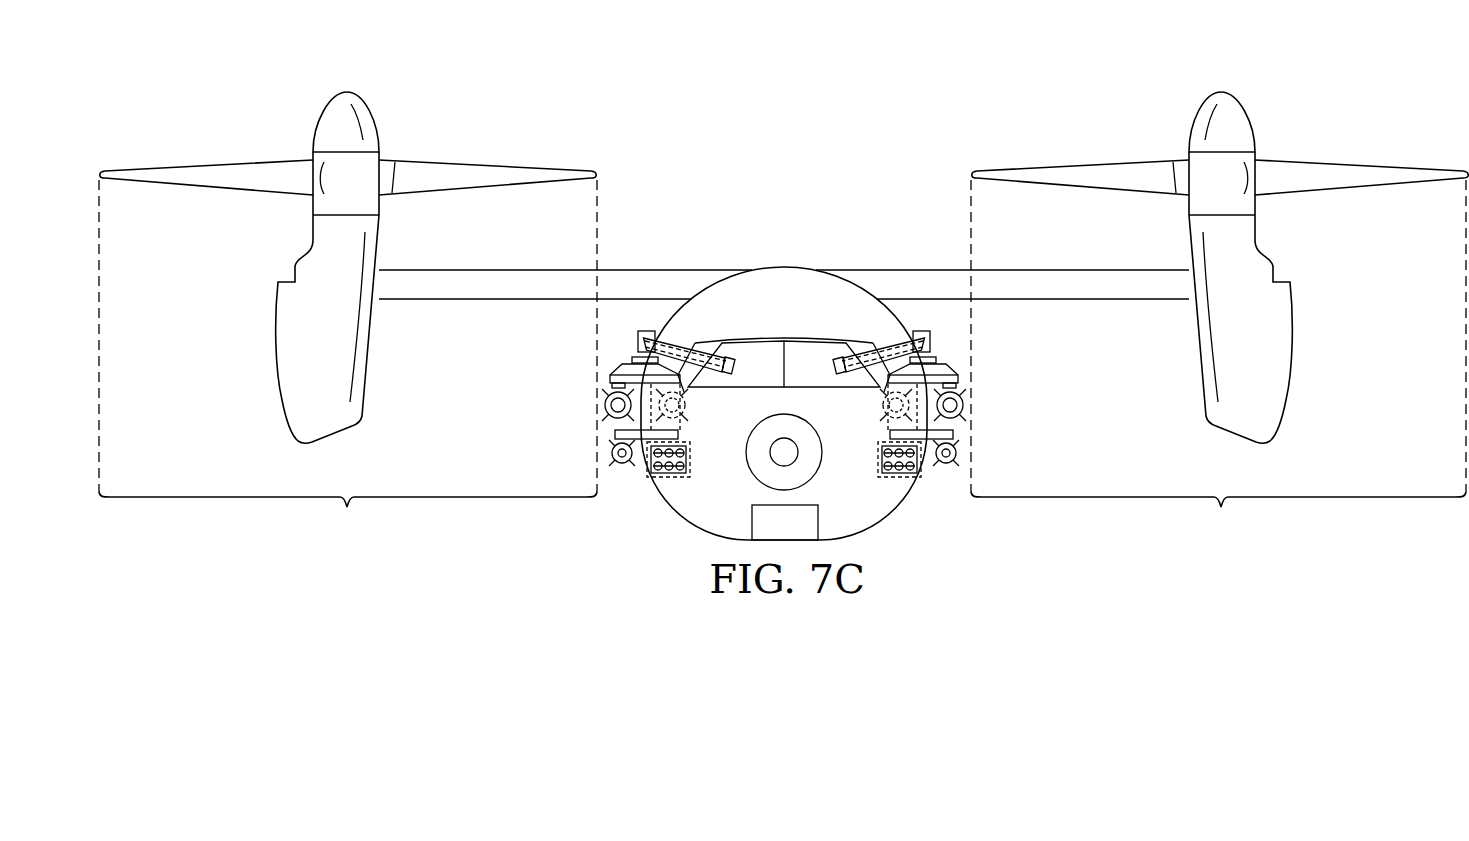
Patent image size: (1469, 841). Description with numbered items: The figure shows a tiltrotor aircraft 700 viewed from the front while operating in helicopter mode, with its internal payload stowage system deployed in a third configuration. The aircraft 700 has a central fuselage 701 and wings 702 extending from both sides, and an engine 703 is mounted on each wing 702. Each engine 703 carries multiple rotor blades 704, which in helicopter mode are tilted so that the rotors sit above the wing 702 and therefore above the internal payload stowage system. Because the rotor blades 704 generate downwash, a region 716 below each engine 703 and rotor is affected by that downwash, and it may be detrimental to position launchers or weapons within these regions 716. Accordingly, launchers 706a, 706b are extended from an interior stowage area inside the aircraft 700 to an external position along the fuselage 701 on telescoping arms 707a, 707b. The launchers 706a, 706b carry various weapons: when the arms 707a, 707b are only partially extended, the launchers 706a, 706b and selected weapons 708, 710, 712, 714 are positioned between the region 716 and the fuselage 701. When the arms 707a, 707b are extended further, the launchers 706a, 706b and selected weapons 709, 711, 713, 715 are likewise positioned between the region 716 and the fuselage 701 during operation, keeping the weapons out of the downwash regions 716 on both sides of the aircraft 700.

The aircraft 700 is at (659, 109).
The fuselage 701 is at (718, 278).
The wings 702 is at (513, 268).
The engine 703 is at (275, 327).
The rotor blades 704 is at (227, 161).
The launcher 706a is at (578, 364).
The launcher 706b is at (990, 364).
The telescoping arm 707a is at (645, 340).
The telescoping arm 707b is at (923, 340).
The weapon 708 is at (604, 406).
The weapon 709 is at (686, 400).
The weapon 710 is at (611, 453).
The weapon 711 is at (667, 478).
The weapon 712 is at (964, 406).
The weapon 713 is at (882, 400).
The weapon 714 is at (957, 453).
The weapon 715 is at (901, 478).
The region 716 is at (782, 514).